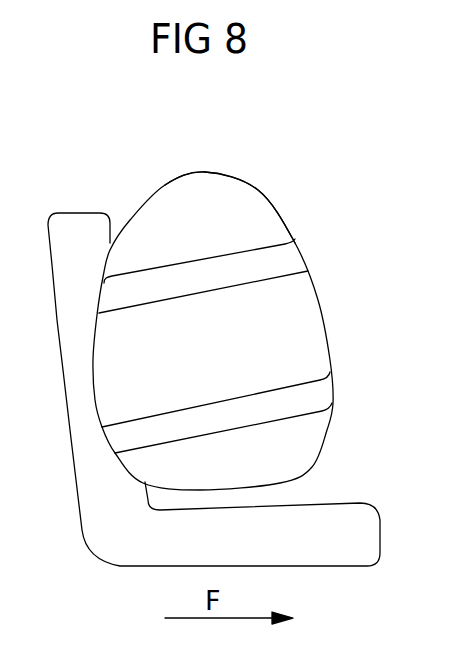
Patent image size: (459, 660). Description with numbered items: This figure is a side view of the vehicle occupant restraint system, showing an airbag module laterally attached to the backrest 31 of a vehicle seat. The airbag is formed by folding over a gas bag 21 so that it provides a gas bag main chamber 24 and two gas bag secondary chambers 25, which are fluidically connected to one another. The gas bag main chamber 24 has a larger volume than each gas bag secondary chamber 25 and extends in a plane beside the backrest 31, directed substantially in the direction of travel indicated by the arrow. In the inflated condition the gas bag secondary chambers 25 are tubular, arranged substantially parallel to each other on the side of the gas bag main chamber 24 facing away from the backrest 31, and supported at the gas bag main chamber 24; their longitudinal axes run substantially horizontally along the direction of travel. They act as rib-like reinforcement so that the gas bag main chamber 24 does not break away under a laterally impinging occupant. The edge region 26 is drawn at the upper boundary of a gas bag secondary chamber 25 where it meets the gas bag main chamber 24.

The gas bag 21 is at (300, 353).
The gas bag main chamber 24 is at (173, 207).
The gas bag secondary chamber 25 is at (227, 272).
The upper groove edge 26 is at (300, 248).
The backrest 31 is at (68, 240).